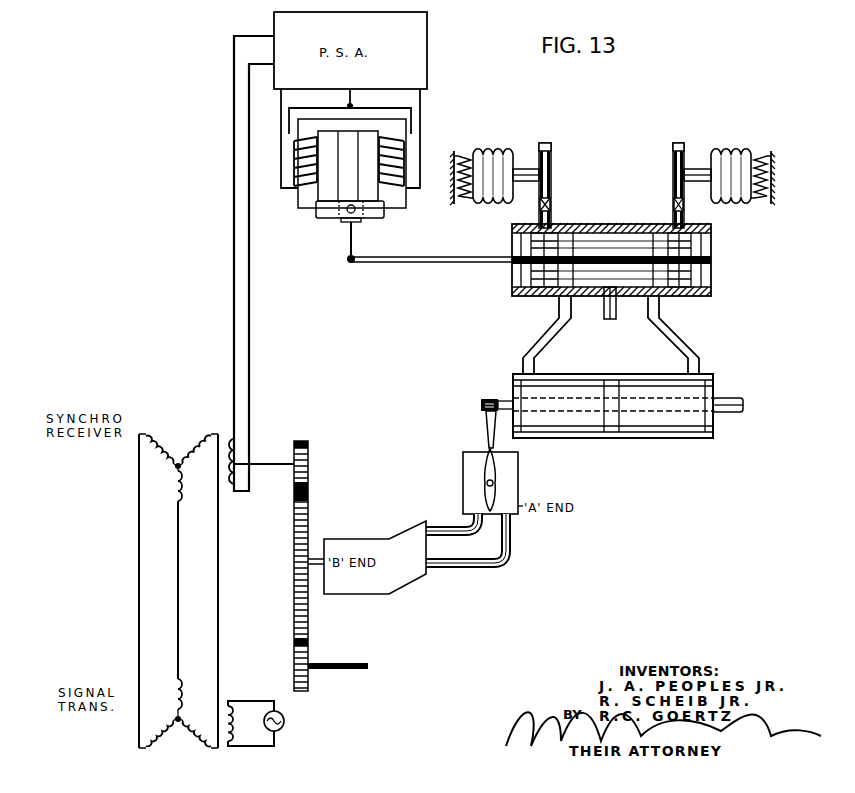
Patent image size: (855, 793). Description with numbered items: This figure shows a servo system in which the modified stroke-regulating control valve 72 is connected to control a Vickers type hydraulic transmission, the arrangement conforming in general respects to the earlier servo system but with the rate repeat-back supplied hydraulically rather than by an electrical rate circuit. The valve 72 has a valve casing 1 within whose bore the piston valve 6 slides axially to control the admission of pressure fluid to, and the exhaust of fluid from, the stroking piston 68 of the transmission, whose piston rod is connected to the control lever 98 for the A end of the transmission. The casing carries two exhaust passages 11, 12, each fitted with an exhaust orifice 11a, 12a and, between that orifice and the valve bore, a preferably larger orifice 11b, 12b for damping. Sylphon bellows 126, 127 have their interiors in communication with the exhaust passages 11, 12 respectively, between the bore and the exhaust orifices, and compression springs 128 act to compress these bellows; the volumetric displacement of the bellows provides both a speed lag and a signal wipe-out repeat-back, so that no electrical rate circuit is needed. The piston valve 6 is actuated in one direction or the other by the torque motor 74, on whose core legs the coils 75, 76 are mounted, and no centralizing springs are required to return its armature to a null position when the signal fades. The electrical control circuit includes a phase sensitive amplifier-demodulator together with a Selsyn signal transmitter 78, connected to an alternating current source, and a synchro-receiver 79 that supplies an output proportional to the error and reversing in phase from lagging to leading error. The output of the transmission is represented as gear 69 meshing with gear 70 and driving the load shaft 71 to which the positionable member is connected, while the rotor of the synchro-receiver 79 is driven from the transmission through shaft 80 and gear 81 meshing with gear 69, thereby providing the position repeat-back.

The valve casing 1 is at (617, 219).
The piston valve 6 is at (585, 255).
The exhaust passage 11 is at (543, 150).
The exhaust orifice 11a is at (539, 136).
The orifice 11b is at (543, 195).
The exhaust passage 12 is at (665, 149).
The exhaust orifice 12a is at (671, 136).
The orifice 12b is at (665, 196).
The stroking piston 68 is at (618, 430).
The gear 69 is at (286, 539).
The gear 70 is at (286, 648).
The load shaft 71 is at (333, 661).
The control valve 72 is at (688, 290).
The torque motor 74 is at (305, 203).
The coil 75 is at (383, 136).
The coil 76 is at (297, 136).
The Selsyn transmitter 78 is at (171, 723).
The synchro-receiver 79 is at (168, 443).
The shaft 80 is at (275, 458).
The gear 81 is at (300, 446).
The control lever 98 is at (479, 436).
The Sylphon bellows 126 is at (496, 141).
The Sylphon bellows 127 is at (734, 134).
The compression springs 128 is at (456, 201).